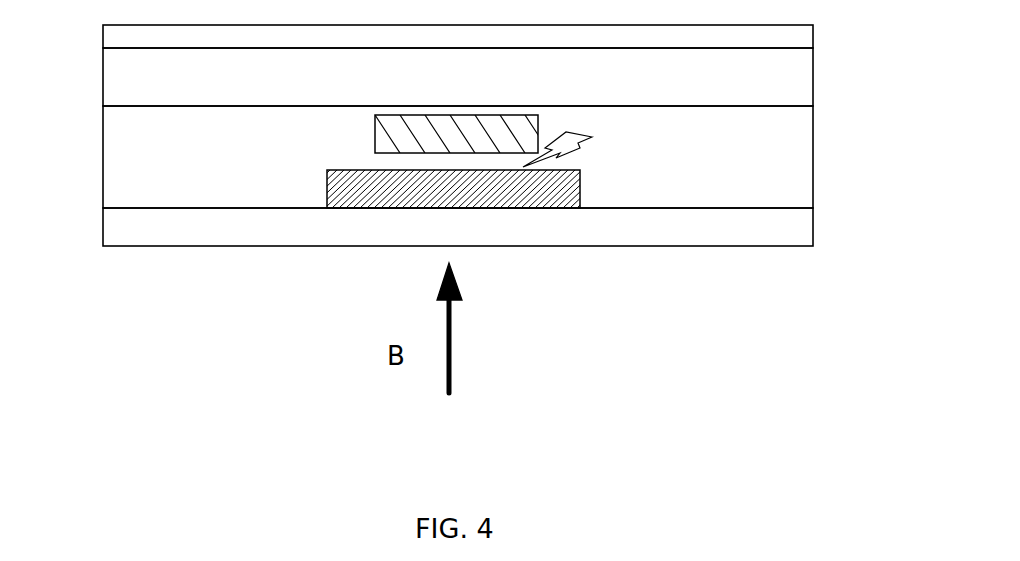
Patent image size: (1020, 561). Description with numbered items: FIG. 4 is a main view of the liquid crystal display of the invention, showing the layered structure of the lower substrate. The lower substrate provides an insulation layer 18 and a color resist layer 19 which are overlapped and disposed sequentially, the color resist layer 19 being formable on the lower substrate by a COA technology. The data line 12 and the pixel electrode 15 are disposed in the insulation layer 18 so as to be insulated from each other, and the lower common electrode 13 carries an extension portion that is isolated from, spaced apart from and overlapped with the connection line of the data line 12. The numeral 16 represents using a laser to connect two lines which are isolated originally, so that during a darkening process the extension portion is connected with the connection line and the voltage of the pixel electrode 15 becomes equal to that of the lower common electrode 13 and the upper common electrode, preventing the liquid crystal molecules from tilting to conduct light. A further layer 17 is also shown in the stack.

The data line 12 is at (375, 130).
The lower common electrode 13 is at (400, 195).
The pixel electrode 15 is at (805, 30).
The laser connection 16 is at (592, 137).
The bottom layer 17 is at (800, 227).
The insulation layer 18 is at (807, 161).
The color resist layer 19 is at (805, 77).